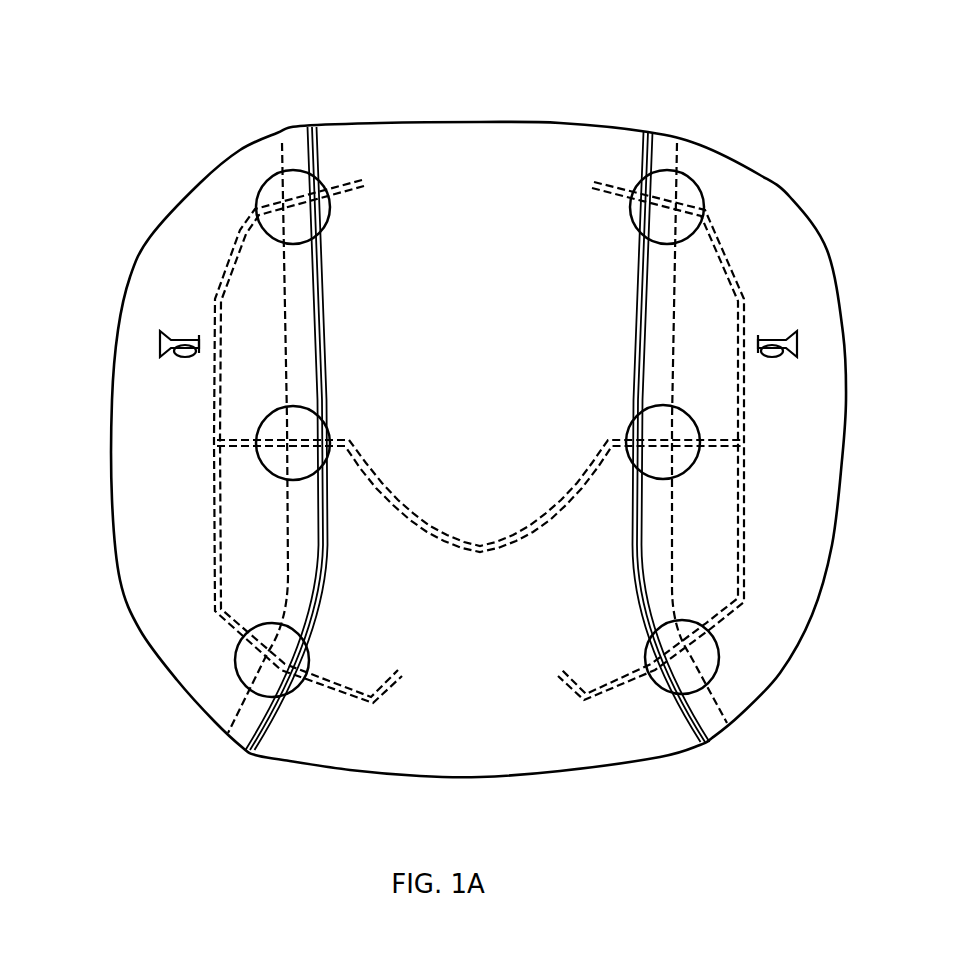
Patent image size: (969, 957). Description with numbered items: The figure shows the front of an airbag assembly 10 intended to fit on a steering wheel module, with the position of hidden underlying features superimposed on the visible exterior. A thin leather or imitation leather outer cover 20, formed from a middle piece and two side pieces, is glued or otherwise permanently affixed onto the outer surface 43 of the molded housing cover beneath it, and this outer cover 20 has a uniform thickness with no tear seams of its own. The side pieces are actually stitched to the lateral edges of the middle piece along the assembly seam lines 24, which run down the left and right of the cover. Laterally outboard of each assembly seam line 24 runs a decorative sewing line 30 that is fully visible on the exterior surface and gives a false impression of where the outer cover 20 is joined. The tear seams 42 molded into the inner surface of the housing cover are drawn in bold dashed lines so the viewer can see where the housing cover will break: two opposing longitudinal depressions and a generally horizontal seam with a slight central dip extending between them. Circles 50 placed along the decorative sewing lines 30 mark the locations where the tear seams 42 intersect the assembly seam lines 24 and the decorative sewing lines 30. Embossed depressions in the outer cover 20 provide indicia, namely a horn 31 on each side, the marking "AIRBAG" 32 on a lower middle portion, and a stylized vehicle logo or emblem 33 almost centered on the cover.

The airbag assembly 10 is at (138, 64).
The outer cover 20 is at (124, 442).
The outer surface 43 is at (424, 450).
The assembly seam lines 24 is at (312, 128).
The decorative sewing line 30 is at (282, 158).
The circles 50 is at (257, 199).
The tear seams 42 is at (215, 276).
The horn 31 is at (160, 343).
The logo or emblem 33 is at (417, 283).
The "AIRBAG" marking 32 is at (485, 662).